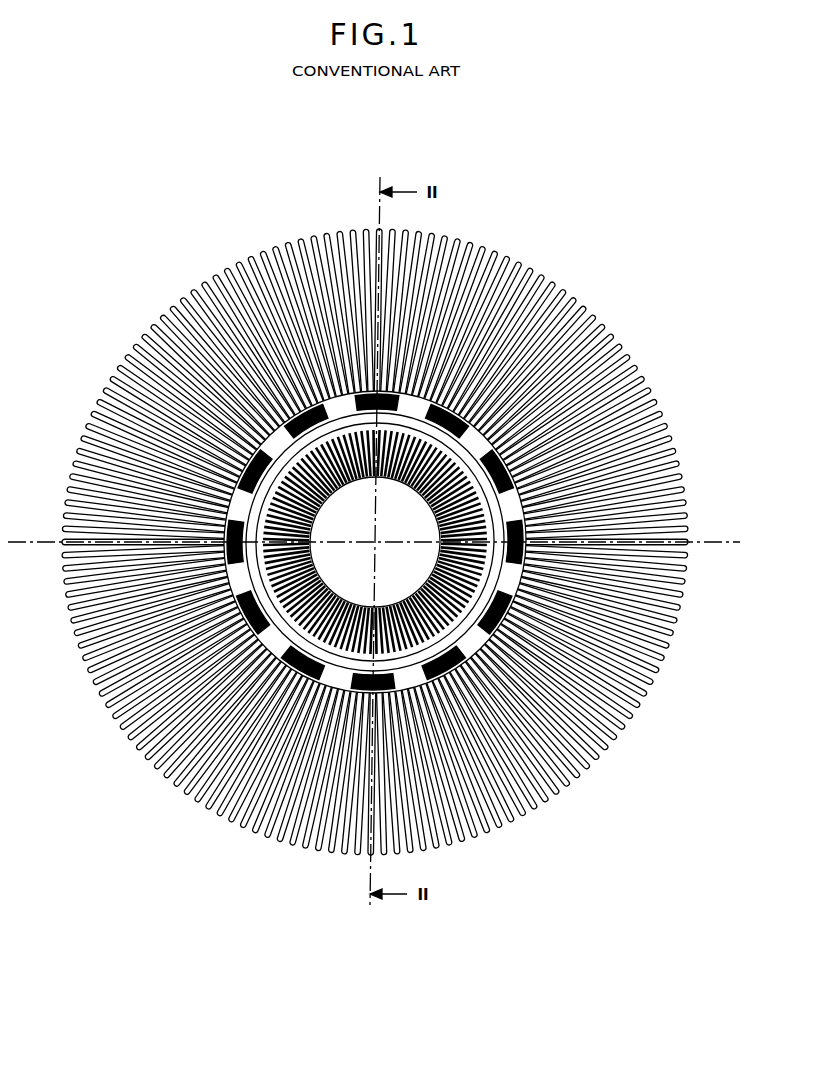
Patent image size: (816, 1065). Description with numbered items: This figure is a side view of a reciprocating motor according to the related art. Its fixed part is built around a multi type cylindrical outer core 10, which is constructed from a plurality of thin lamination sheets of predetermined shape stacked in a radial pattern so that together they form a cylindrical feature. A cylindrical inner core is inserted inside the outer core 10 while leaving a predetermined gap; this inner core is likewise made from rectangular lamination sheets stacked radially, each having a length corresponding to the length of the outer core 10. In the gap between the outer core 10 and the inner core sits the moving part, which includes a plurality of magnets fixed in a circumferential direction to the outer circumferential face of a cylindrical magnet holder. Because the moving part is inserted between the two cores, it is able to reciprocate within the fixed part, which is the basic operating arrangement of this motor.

The multi type cylindrical outer core 10 is at (601, 272).